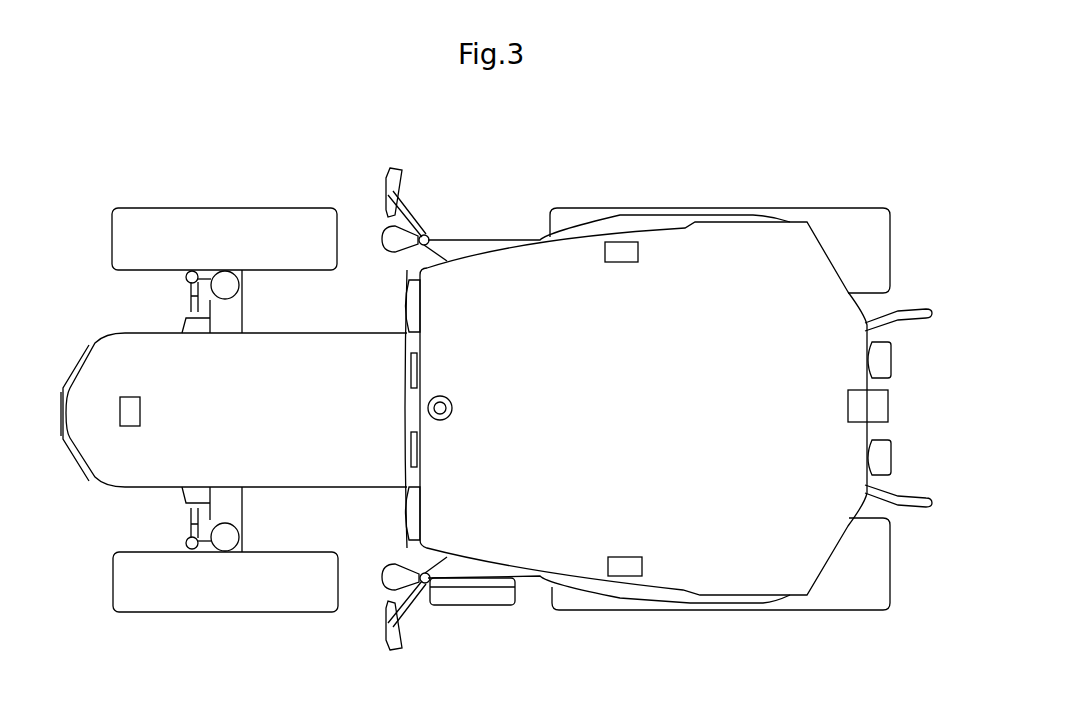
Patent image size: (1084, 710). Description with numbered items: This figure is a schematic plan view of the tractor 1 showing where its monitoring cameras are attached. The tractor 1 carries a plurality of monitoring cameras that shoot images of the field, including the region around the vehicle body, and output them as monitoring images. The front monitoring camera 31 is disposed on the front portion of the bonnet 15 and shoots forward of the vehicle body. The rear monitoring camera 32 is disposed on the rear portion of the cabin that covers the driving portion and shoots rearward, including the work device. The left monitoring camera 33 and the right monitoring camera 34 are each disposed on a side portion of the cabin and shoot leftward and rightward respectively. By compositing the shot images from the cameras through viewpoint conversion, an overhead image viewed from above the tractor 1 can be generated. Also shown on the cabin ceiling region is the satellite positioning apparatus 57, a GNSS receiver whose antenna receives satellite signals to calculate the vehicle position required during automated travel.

The tractor 1 is at (696, 169).
The bonnet 15 is at (331, 353).
The front monitoring camera 31 is at (140, 410).
The rear monitoring camera 32 is at (848, 405).
The left monitoring camera 33 is at (642, 567).
The right monitoring camera 34 is at (638, 252).
The satellite positioning apparatus 57 is at (446, 400).